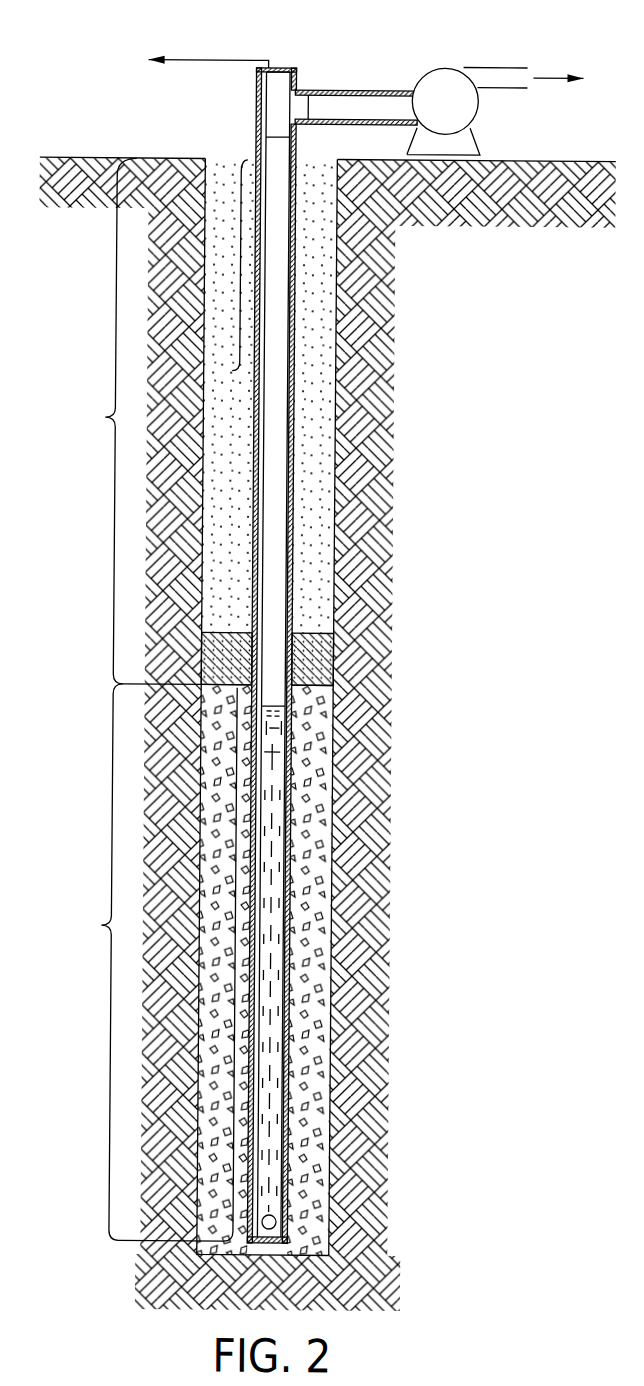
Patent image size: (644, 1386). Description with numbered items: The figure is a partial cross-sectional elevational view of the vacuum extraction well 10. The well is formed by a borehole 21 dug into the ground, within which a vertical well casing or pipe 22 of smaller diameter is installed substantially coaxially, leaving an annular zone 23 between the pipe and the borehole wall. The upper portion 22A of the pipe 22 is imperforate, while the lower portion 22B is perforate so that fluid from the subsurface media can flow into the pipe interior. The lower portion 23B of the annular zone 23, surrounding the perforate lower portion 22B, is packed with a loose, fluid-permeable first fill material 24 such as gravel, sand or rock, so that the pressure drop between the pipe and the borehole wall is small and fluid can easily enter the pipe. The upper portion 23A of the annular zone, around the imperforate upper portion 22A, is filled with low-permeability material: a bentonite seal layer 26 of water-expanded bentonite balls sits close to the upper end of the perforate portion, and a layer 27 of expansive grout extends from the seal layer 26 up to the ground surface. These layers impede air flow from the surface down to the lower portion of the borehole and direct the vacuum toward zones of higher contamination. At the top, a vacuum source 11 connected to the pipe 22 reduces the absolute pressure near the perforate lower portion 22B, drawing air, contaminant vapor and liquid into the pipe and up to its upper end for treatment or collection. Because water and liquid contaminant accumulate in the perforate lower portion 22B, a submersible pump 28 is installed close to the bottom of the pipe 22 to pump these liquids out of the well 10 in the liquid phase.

The vacuum extraction well 10 is at (336, 496).
The vacuum source 11 is at (436, 84).
The borehole 21 is at (331, 312).
The well casing 22 is at (293, 455).
The upper portion of the pipe 22A is at (230, 371).
The lower portion of the pipe 22B is at (238, 884).
The annular zone 23 is at (233, 157).
The upper portion of the annular zone 23A is at (131, 421).
The lower portion of the annular zone 23B is at (139, 962).
The first fill material 24 is at (321, 816).
The bentonite seal layer 26 is at (333, 658).
The layer of expansive grout 27 is at (312, 566).
The submersible pump 28 is at (281, 1222).